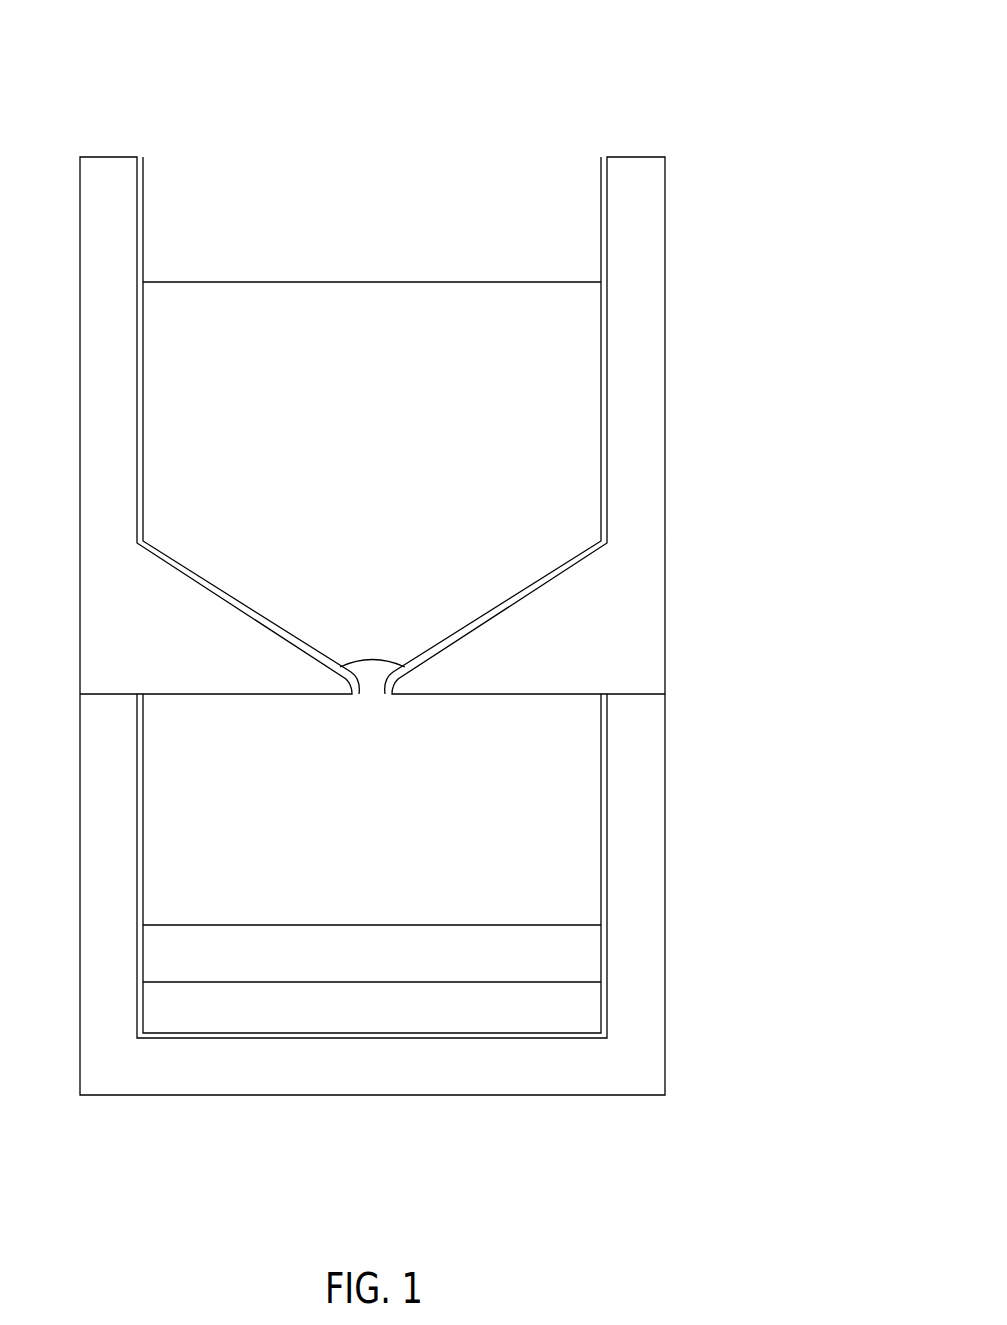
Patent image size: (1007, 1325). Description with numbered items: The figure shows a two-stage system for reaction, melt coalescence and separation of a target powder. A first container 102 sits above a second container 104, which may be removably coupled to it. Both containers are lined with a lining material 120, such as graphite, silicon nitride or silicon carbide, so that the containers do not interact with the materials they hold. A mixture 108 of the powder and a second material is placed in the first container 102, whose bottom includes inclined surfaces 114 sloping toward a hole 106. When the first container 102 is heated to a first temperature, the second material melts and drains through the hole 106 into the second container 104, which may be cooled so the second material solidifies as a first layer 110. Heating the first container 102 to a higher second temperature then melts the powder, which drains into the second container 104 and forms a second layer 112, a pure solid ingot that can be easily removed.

The first container 102 is at (665, 328).
The second container 104 is at (665, 796).
The hole 106 is at (365, 690).
The mixture 108 is at (390, 403).
The first layer 110 is at (390, 1018).
The second layer 112 is at (390, 961).
The inclined surfaces 114 is at (243, 607).
The lining material 120 is at (143, 373).